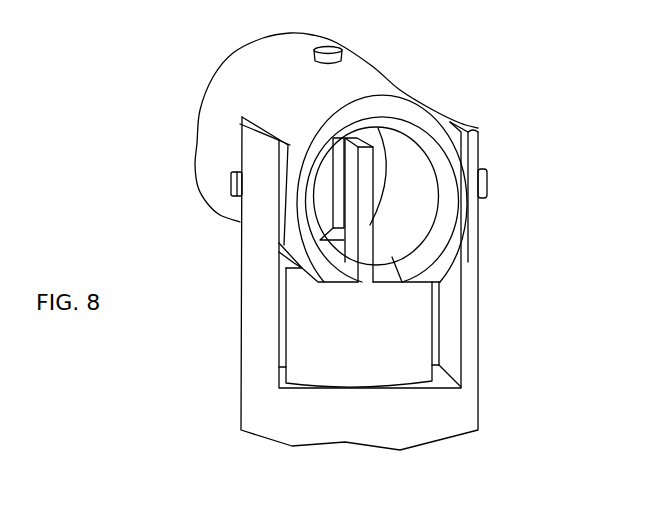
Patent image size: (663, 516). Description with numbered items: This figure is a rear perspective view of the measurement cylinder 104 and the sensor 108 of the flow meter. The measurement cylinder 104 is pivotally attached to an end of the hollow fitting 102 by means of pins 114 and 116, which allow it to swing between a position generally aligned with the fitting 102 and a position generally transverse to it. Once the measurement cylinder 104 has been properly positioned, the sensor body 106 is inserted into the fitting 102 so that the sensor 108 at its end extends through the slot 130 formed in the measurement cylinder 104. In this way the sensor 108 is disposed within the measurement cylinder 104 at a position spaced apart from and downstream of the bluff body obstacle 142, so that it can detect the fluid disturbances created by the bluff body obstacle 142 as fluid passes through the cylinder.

The fitting 102 is at (253, 367).
The measurement cylinder 104 is at (368, 68).
The sensor body 106 is at (422, 344).
The sensor 108 is at (367, 222).
The pin 114 is at (230, 182).
The pin 116 is at (485, 177).
The slot 130 is at (385, 263).
The bluff body obstacle 142 is at (322, 158).